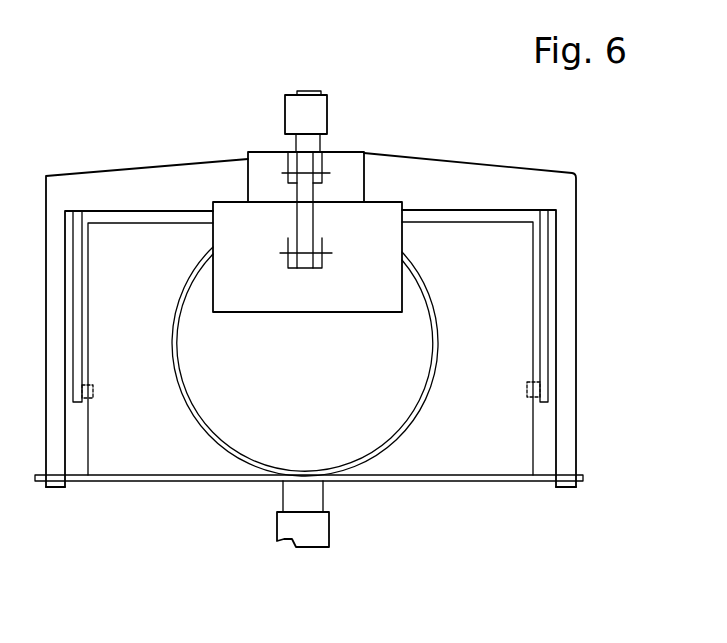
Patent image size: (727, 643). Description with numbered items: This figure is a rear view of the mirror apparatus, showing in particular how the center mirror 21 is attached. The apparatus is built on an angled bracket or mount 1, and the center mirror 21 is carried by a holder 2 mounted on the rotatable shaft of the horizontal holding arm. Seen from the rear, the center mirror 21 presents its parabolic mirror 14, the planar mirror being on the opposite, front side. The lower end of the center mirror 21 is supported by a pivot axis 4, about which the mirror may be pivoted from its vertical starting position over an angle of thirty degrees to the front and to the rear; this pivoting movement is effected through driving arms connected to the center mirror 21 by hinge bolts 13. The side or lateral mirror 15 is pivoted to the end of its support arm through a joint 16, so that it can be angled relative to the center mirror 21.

The angled bracket or mount 1 is at (323, 113).
The holder 2 is at (255, 172).
The pivot axis 4 is at (523, 478).
The hinge bolts 13 is at (82, 392).
The parabolic mirror 14 is at (346, 354).
The lateral mirror 15 is at (378, 266).
The joints 16 is at (310, 195).
The center mirror 21 is at (157, 494).